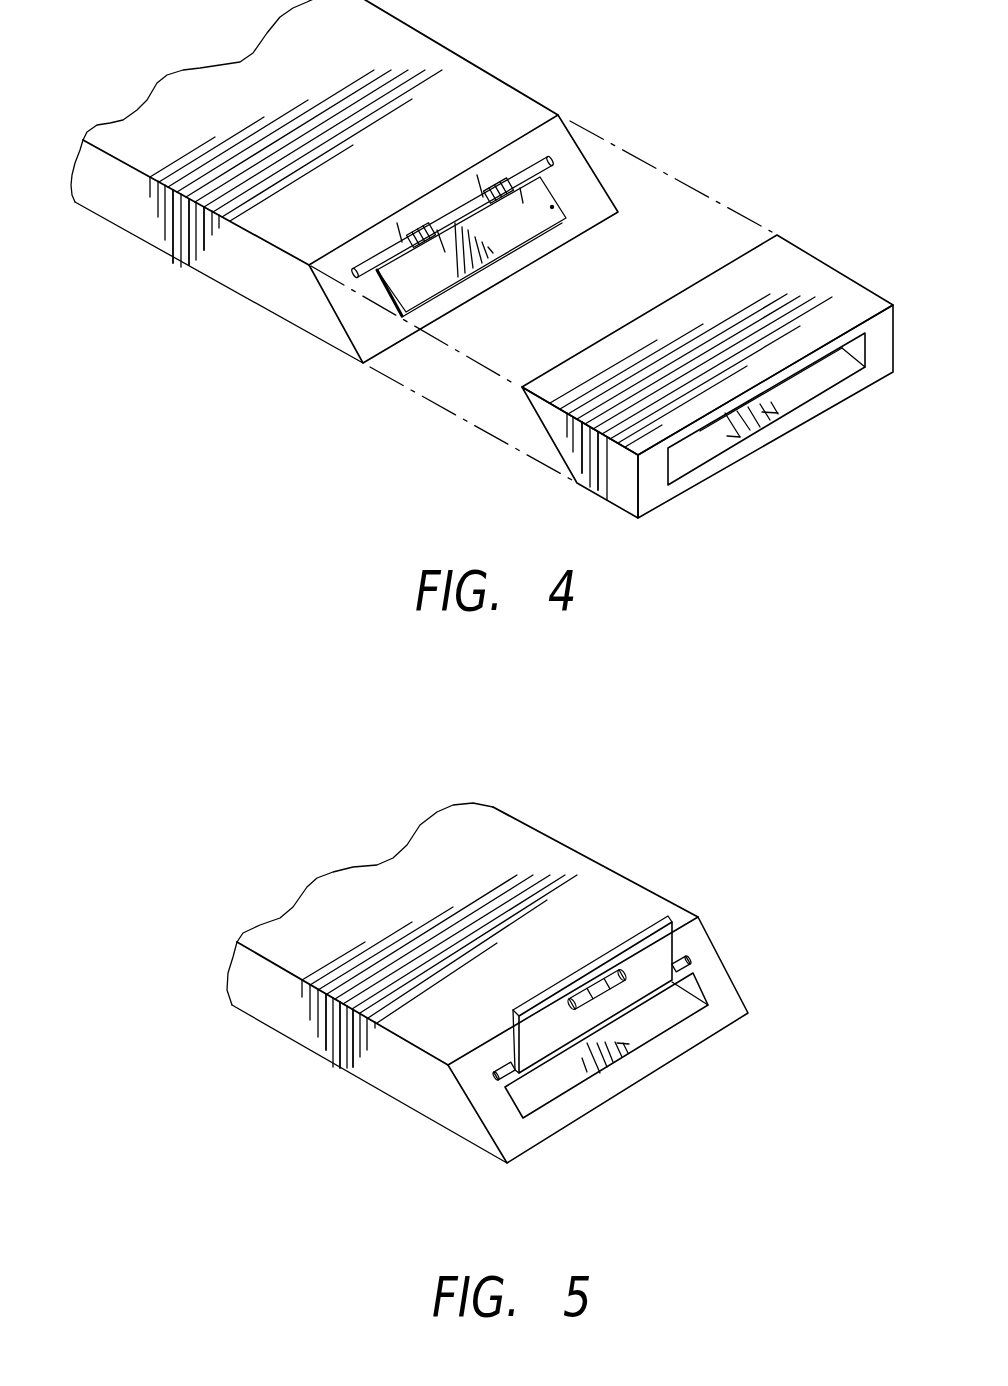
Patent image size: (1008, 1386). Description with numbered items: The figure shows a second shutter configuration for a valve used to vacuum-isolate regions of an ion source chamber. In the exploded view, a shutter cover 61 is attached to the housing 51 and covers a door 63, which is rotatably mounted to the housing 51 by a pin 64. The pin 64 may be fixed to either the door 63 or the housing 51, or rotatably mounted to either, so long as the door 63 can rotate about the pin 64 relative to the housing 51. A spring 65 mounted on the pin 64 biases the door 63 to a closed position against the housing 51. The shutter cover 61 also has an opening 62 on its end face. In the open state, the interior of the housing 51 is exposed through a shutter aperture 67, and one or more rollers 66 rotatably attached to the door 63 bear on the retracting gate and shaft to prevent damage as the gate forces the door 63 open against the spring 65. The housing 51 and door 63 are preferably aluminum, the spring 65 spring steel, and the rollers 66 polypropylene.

In FIG. 4, the housing 51 is at (500, 77).
In FIG. 5, the housing 51 is at (568, 845).
In FIG. 4, the shutter cover 61 is at (778, 236).
In FIG. 4, the opening in connector block 62 is at (700, 457).
In FIG. 4, the door 63 is at (567, 220).
In FIG. 5, the door 63 is at (667, 921).
In FIG. 4, the pin 64 is at (355, 280).
In FIG. 4, the spring 65 is at (540, 182).
In FIG. 5, the rollers 66 is at (628, 972).
In FIG. 5, the shutter aperture 67 is at (565, 1093).